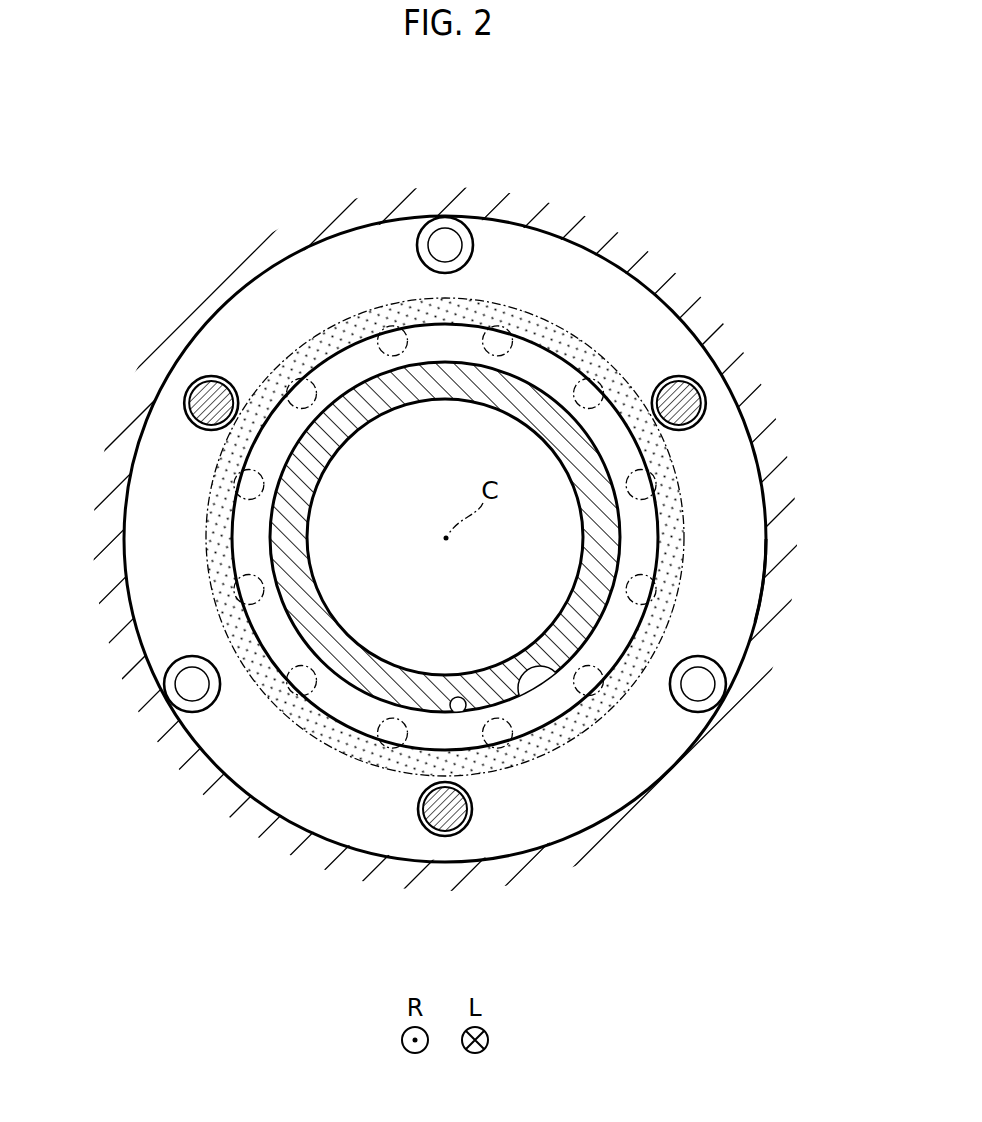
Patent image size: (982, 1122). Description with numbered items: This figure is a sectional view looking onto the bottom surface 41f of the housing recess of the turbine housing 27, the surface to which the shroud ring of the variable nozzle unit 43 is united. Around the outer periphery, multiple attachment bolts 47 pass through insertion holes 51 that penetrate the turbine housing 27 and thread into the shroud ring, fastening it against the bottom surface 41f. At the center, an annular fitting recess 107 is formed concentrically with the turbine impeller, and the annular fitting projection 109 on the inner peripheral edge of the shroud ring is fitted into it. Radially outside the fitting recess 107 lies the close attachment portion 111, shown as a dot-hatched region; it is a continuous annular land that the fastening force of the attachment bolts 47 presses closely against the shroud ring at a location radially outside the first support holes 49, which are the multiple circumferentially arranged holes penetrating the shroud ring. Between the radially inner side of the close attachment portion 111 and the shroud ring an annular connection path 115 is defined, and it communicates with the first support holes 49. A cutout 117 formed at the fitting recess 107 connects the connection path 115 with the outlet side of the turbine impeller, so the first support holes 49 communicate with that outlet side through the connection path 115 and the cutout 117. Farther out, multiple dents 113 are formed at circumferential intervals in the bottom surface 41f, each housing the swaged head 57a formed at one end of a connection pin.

The turbine housing 27 is at (658, 275).
The bottom surface of the housing recess 41f is at (746, 578).
The variable nozzle unit 43 is at (103, 604).
The attachment bolts 47 is at (205, 379).
The first support holes 49 is at (298, 378).
The insertion holes 51 is at (202, 404).
The swaged head 57a is at (442, 228).
The annular fitting recess 107 is at (462, 712).
The annular fitting projection 109 is at (390, 682).
The close attachment portion 111 is at (212, 520).
The dents 113 is at (416, 237).
The annular connection path 115 is at (272, 522).
The cutout 117 is at (553, 705).